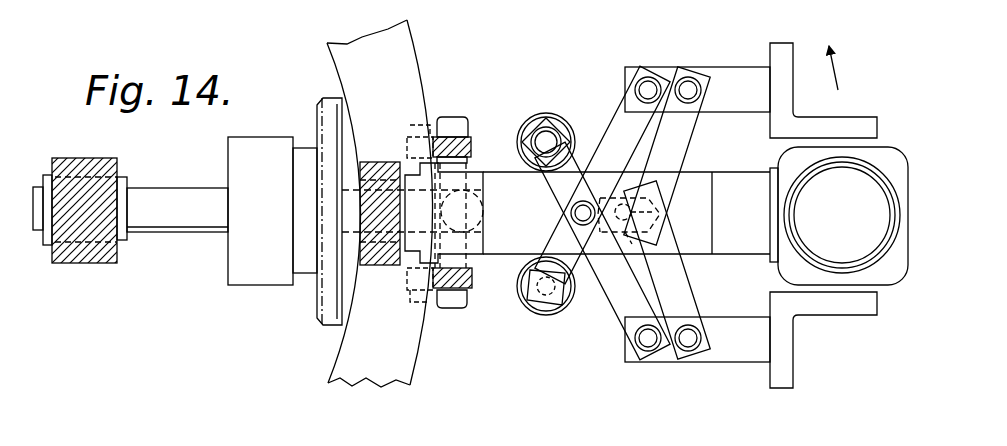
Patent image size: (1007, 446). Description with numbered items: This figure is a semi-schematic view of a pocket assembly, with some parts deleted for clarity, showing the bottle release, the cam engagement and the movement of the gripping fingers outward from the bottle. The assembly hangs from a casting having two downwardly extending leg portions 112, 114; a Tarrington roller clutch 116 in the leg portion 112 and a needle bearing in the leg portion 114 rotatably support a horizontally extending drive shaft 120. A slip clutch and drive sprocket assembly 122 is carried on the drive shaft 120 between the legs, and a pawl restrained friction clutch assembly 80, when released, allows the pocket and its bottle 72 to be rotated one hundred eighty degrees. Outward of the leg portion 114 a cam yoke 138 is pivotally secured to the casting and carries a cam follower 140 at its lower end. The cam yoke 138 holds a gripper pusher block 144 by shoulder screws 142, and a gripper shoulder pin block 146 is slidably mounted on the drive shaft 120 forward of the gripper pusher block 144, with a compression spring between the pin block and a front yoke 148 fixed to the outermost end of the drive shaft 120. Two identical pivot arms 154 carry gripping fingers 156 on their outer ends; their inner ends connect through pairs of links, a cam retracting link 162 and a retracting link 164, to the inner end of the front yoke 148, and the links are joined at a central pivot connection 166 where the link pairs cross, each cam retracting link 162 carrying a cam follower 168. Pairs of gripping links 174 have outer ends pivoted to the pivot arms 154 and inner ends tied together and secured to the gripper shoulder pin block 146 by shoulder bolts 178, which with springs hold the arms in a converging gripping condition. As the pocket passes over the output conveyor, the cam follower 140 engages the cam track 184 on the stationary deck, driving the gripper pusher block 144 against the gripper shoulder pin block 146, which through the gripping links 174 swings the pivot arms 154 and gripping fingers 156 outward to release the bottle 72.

The bottle 72 is at (894, 277).
The pawl restrained friction clutch assembly 80 is at (245, 289).
The leg portion 112 is at (88, 160).
The leg portion 114 is at (378, 268).
The roller clutch 116 is at (94, 264).
The drive shaft 120 is at (174, 192).
The slip clutch and drive sprocket assembly 122 is at (287, 291).
The cam yoke 138 is at (457, 293).
The cam follower 140 is at (489, 192).
The shoulder screws 142 is at (450, 133).
The gripper pusher block 144 is at (472, 172).
The gripper shoulder pin block 146 is at (510, 256).
The front yoke 148 is at (695, 178).
The pivot arms 154 is at (731, 68).
The gripping fingers 156 is at (856, 116).
The cam retracting link 162 is at (615, 307).
The retracting link 164 is at (616, 120).
The pivot pin 166 is at (574, 213).
The cam followers 168 is at (532, 116).
The gripping links 174 is at (688, 131).
The shoulder bolts 178 is at (657, 212).
The cam track 184 is at (411, 383).